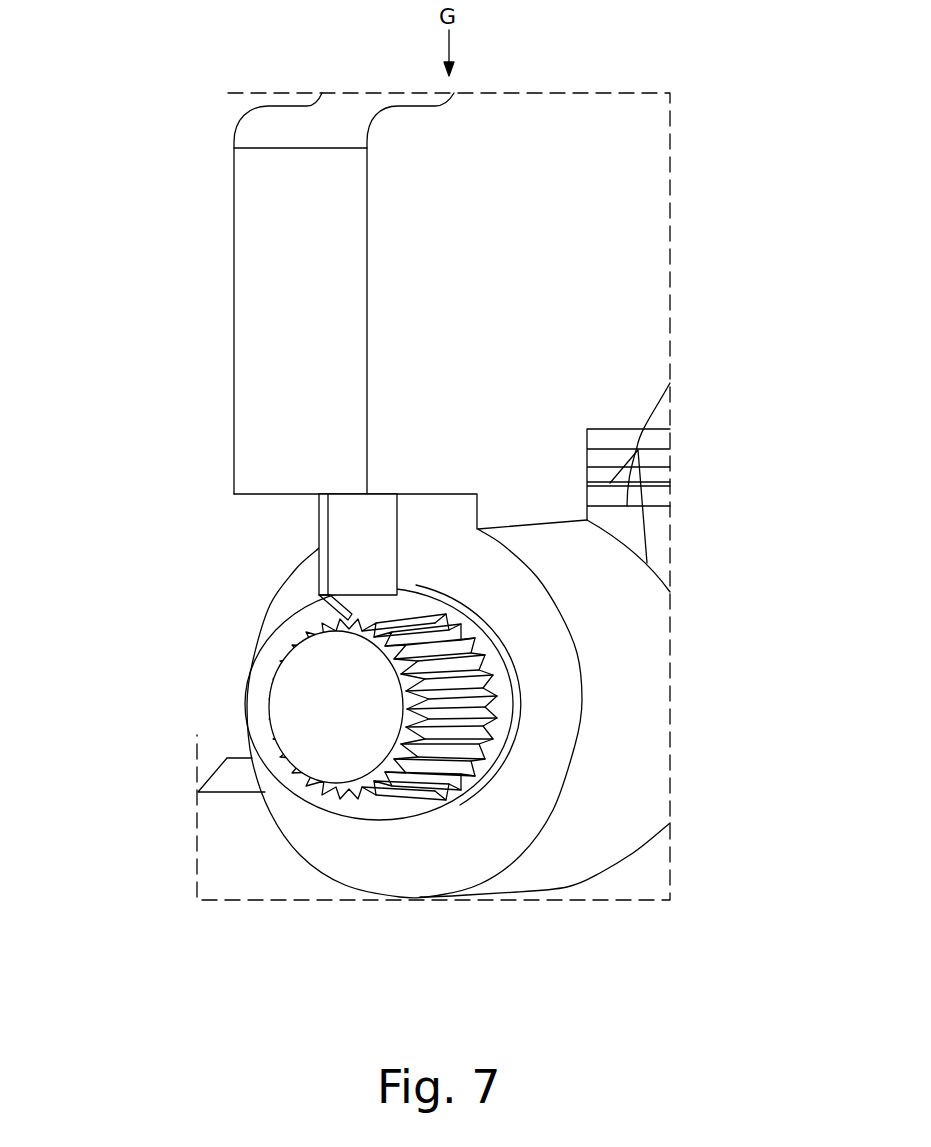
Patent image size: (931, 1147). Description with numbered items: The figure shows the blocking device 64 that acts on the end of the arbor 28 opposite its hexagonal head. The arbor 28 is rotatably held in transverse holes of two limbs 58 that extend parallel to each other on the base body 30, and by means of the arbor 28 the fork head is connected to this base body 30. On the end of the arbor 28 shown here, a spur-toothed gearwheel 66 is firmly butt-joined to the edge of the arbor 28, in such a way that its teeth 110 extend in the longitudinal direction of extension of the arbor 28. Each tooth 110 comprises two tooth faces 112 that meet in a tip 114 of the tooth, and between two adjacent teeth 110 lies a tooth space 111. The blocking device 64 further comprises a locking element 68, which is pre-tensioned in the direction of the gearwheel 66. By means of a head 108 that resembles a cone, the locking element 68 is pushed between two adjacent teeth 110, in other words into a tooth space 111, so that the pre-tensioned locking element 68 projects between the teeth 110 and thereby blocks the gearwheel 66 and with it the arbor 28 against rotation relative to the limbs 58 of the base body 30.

The arbor 28 is at (700, 588).
The base body 30 is at (637, 163).
The limb 58 is at (647, 658).
The blocking device 64 is at (177, 490).
The spur-toothed gearwheel 66 is at (330, 680).
The locking element 68 is at (370, 527).
The head 108 is at (320, 597).
The teeth 110 is at (377, 783).
The tooth space 111 is at (380, 687).
The tooth faces 112 is at (460, 752).
The tip 114 is at (480, 707).